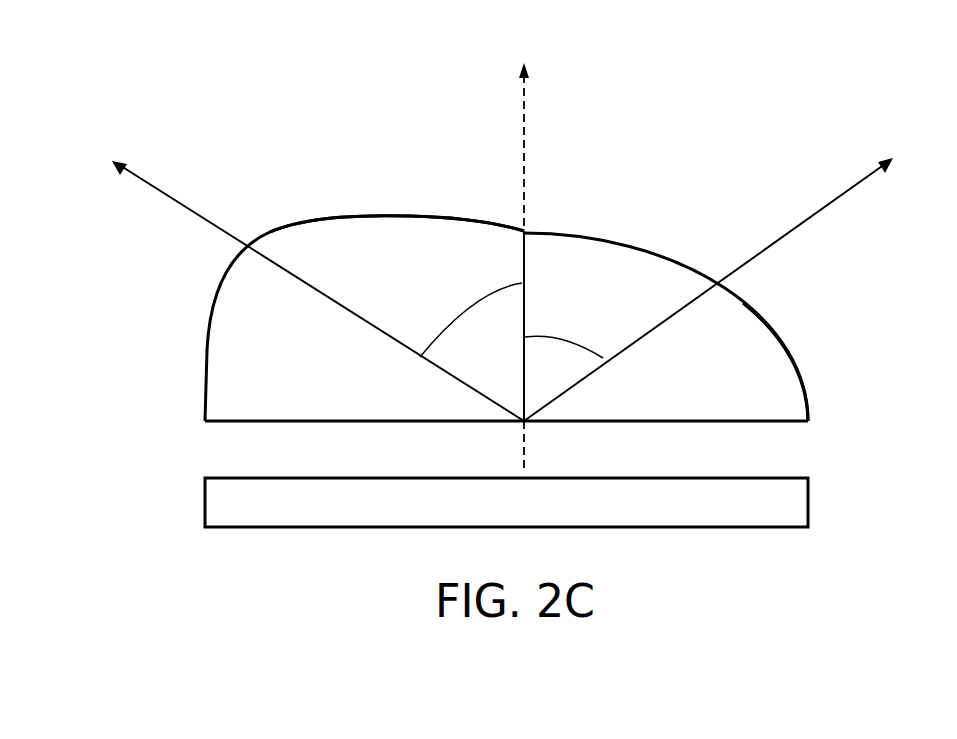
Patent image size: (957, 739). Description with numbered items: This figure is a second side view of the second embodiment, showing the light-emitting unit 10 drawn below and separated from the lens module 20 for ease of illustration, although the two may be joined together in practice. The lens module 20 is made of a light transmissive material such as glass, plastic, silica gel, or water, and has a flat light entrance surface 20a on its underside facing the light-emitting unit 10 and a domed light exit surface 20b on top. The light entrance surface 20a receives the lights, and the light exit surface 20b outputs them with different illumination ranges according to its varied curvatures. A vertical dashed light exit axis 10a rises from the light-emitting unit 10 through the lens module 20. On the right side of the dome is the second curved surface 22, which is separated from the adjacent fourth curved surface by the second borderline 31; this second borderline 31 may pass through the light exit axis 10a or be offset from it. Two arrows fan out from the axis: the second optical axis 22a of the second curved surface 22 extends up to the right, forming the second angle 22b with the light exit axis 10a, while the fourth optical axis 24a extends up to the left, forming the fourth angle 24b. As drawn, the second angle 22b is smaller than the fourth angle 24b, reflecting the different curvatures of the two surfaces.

The light-emitting unit 10 is at (787, 477).
The light exit axis 10a is at (518, 250).
The lens module 20 is at (762, 312).
The light entrance surface 20a is at (237, 423).
The light exit surface 20b is at (323, 220).
The second curved surface 22 is at (783, 384).
The second optical axis 22a is at (727, 271).
The second angle 22b is at (548, 360).
The fourth optical axis 24a is at (296, 276).
The fourth angle 24b is at (488, 337).
The second borderline 31 is at (527, 250).